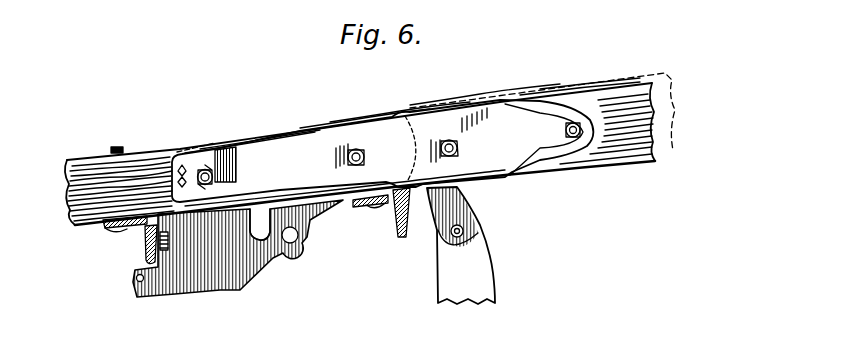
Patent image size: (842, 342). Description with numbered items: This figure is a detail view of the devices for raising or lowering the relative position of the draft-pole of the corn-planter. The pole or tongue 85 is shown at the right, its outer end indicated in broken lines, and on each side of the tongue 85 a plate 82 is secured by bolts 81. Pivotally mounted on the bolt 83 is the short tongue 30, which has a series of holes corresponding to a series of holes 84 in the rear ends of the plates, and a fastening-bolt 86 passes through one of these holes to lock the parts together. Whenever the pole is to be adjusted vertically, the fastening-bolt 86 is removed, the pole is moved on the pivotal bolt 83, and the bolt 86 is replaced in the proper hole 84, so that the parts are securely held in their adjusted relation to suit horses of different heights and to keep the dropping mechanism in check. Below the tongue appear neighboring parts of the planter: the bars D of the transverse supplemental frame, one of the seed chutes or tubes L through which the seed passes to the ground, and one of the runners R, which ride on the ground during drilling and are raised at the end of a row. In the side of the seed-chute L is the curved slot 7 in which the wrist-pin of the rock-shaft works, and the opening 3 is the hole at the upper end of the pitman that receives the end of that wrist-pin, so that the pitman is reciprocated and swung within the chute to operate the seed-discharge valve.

The short tongue 30 is at (72, 186).
The plate 82 is at (382, 151).
The bolt 81 is at (566, 130).
The pivotal bolt 83 is at (349, 161).
The hole 84 is at (208, 170).
The pole or tongue 85 is at (657, 124).
The fastening-bolt 86 is at (214, 177).
The curved slot 7 is at (260, 224).
The opening 3 is at (297, 240).
The bar of supplemental frame D is at (395, 222).
The seed chute or tube L is at (238, 248).
The runner R is at (474, 245).